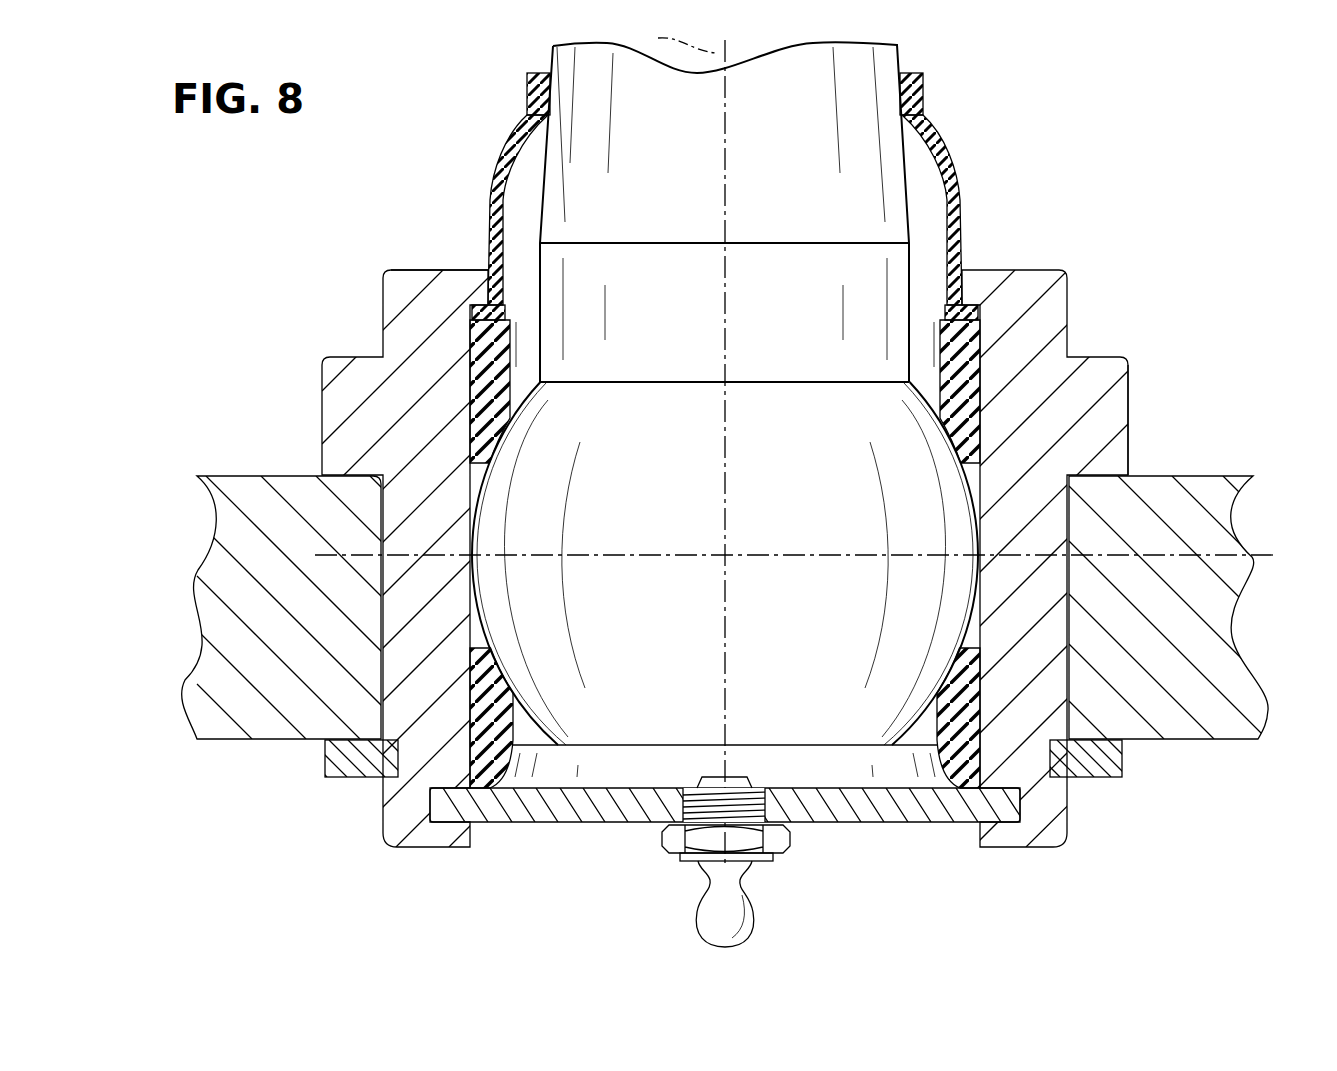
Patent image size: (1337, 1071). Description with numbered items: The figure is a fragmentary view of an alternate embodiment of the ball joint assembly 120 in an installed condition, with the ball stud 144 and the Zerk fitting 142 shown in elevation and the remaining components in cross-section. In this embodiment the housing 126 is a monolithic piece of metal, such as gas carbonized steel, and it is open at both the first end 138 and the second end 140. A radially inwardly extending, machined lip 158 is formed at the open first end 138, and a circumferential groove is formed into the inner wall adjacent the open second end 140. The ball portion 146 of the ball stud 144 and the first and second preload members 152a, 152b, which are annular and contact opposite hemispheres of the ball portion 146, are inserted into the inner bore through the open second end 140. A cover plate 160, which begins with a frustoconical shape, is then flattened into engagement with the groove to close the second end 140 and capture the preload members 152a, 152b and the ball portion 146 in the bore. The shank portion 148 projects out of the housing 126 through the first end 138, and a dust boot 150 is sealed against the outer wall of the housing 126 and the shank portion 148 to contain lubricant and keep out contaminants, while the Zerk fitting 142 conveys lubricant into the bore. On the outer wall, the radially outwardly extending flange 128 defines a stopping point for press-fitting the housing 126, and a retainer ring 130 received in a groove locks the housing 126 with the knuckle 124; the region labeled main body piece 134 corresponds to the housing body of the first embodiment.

The ball joint assembly 120 is at (331, 852).
The knuckle 124 is at (1180, 527).
The housing 126 is at (478, 868).
The radially outwardly extending flange 128 is at (1120, 430).
The retainer ring 130 is at (1124, 759).
The main body piece 134 is at (417, 606).
The first end 138 is at (407, 270).
The second end 140 is at (633, 793).
The Zerk fitting 142 is at (737, 913).
The ball stud 144 is at (923, 193).
The ball portion 146 is at (808, 511).
The shank portion 148 is at (803, 171).
The dust boot 150 is at (958, 205).
The first preload member 152a is at (967, 393).
The second preload member 152b is at (967, 710).
The lip 158 is at (482, 272).
The cover plate 160 is at (933, 803).